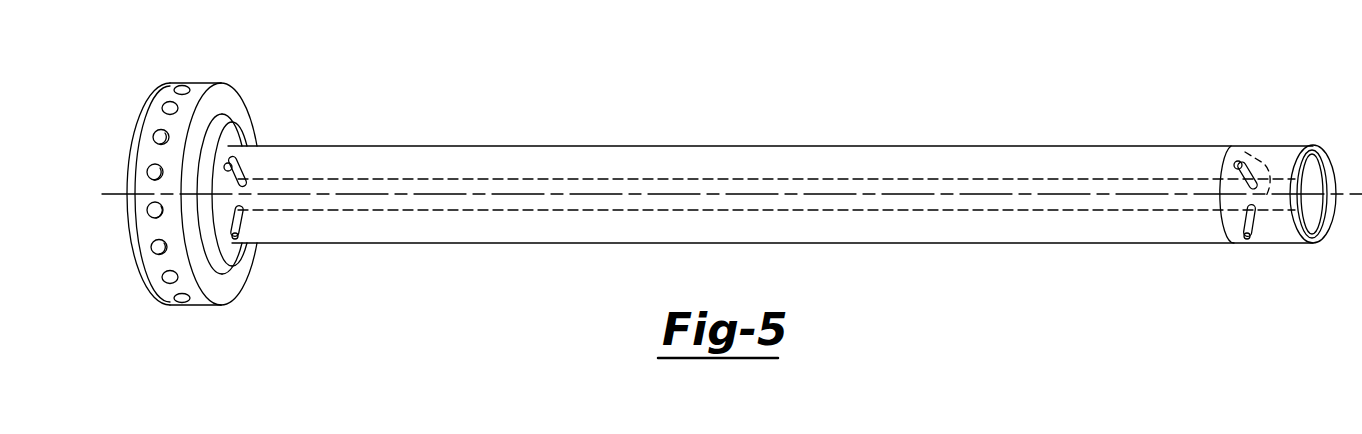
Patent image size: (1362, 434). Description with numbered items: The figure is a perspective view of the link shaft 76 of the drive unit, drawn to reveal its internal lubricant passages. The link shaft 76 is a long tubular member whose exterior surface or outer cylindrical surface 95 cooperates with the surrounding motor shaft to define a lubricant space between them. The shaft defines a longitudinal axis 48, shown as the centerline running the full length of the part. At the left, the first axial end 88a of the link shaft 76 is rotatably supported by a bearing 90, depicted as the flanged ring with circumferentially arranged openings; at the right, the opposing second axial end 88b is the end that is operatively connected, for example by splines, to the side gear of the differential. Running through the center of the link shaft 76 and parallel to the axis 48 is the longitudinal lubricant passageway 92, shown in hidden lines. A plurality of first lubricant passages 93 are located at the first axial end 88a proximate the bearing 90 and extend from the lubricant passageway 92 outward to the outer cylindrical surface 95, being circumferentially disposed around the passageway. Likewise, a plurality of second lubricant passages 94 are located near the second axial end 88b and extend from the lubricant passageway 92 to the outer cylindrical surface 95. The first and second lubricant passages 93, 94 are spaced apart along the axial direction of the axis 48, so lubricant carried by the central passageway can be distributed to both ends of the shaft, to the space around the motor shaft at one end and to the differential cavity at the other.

The link shaft 76 is at (423, 98).
The axis 48 is at (1057, 194).
The first axial end 88a is at (128, 150).
The second axial end 88b is at (1286, 153).
The bearing 90 is at (197, 92).
The lubricant passageway 92 is at (627, 176).
The first lubricant passages 93 is at (250, 172).
The second lubricant passages 94 is at (1270, 165).
The outer cylindrical surface 95 is at (848, 158).